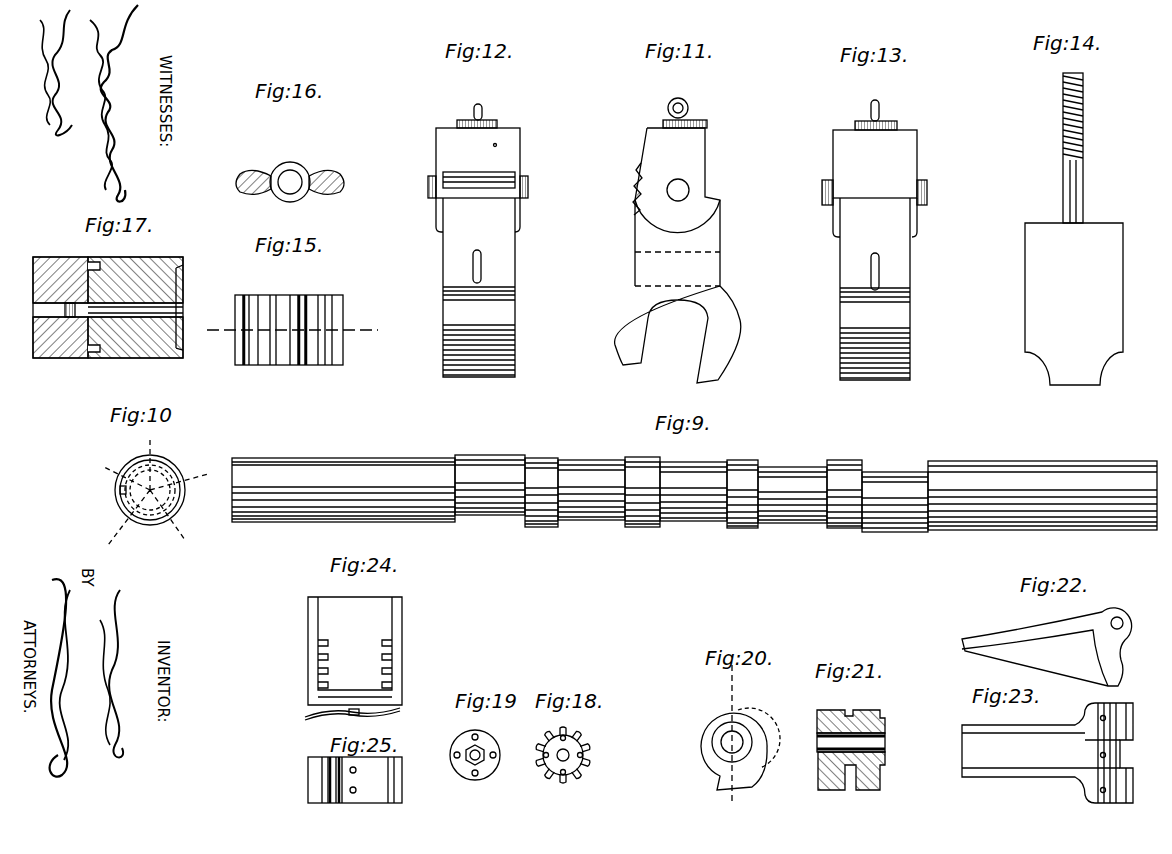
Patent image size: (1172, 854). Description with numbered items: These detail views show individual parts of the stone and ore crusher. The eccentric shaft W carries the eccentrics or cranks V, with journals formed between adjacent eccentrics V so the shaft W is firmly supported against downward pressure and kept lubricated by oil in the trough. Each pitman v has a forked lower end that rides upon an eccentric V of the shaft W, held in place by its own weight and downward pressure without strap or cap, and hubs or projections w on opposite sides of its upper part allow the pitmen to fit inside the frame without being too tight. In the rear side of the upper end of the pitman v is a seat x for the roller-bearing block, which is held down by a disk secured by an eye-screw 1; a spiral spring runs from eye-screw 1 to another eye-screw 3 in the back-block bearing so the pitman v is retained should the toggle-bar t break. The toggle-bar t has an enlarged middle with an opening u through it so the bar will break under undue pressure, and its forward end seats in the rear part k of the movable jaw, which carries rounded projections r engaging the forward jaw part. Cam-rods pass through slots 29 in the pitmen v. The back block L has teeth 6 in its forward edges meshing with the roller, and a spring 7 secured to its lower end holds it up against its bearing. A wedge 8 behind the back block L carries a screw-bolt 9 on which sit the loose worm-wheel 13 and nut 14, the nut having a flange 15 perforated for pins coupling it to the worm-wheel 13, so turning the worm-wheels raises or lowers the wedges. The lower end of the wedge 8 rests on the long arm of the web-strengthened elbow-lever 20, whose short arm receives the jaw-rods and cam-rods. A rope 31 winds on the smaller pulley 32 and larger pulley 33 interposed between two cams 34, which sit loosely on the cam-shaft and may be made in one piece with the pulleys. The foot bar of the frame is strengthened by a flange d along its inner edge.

In FIG. 12, the eye-screw 1 is at (483, 103).
In FIG. 11, the eye-screw 1 is at (681, 101).
In FIG. 13, the eye-screw 1 is at (880, 105).
In FIG. 12, the eye-screw 3 is at (478, 114).
In FIG. 11, the eye-screw 3 is at (685, 114).
In FIG. 13, the eye-screw 3 is at (878, 120).
In FIG. 12, the slots 29 is at (488, 266).
In FIG. 11, the slots 29 is at (688, 270).
In FIG. 13, the slots 29 is at (885, 271).
In FIG. 14, the screw-bolt 9 is at (1065, 148).
In FIG. 14, the wedge 8 is at (1074, 304).
In FIG. 24, the teeth 6 is at (355, 664).
In FIG. 24, the spring 7 is at (347, 717).
In FIG. 25, the spring 7 is at (355, 780).
In FIG. 19, the nuts 14 is at (480, 748).
In FIG. 19, the flanges 15 is at (485, 755).
In FIG. 18, the worm-wheel 13 is at (574, 755).
In FIG. 20, the rope 31 is at (740, 735).
In FIG. 21, the smaller pulley 32 is at (852, 705).
In FIG. 21, the larger pulley 33 is at (845, 710).
In FIG. 21, the cams 34 is at (849, 740).
In FIG. 22, the elbow-lever 20 is at (1047, 647).
In FIG. 23, the elbow-lever 20 is at (1047, 753).
In FIG. 12, the hubs or projections w is at (478, 187).
In FIG. 11, the hubs or projections w is at (678, 190).
In FIG. 13, the hubs or projections w is at (871, 192).
In FIG. 10, the hubs or projections w is at (155, 491).
In FIG. 12, the projections r is at (478, 252).
In FIG. 11, the projections r is at (678, 255).
In FIG. 13, the projections r is at (875, 255).
In FIG. 11, the seat x is at (715, 175).
In FIG. 13, the seat x is at (865, 188).
In FIG. 16, the toggle-bar t is at (315, 158).
In FIG. 17, the toggle-bar t is at (64, 310).
In FIG. 15, the toggle-bar t is at (292, 330).
In FIG. 16, the opening u is at (290, 182).
In FIG. 17, the rear part of movable jaw k is at (108, 307).
In FIG. 17, the flange d is at (44, 279).
In FIG. 24, the back block L is at (355, 651).
In FIG. 9, the eccentrics or cranks V is at (691, 493).
In FIG. 9, the shaft W is at (694, 494).
In FIG. 10, the pitman v is at (152, 488).